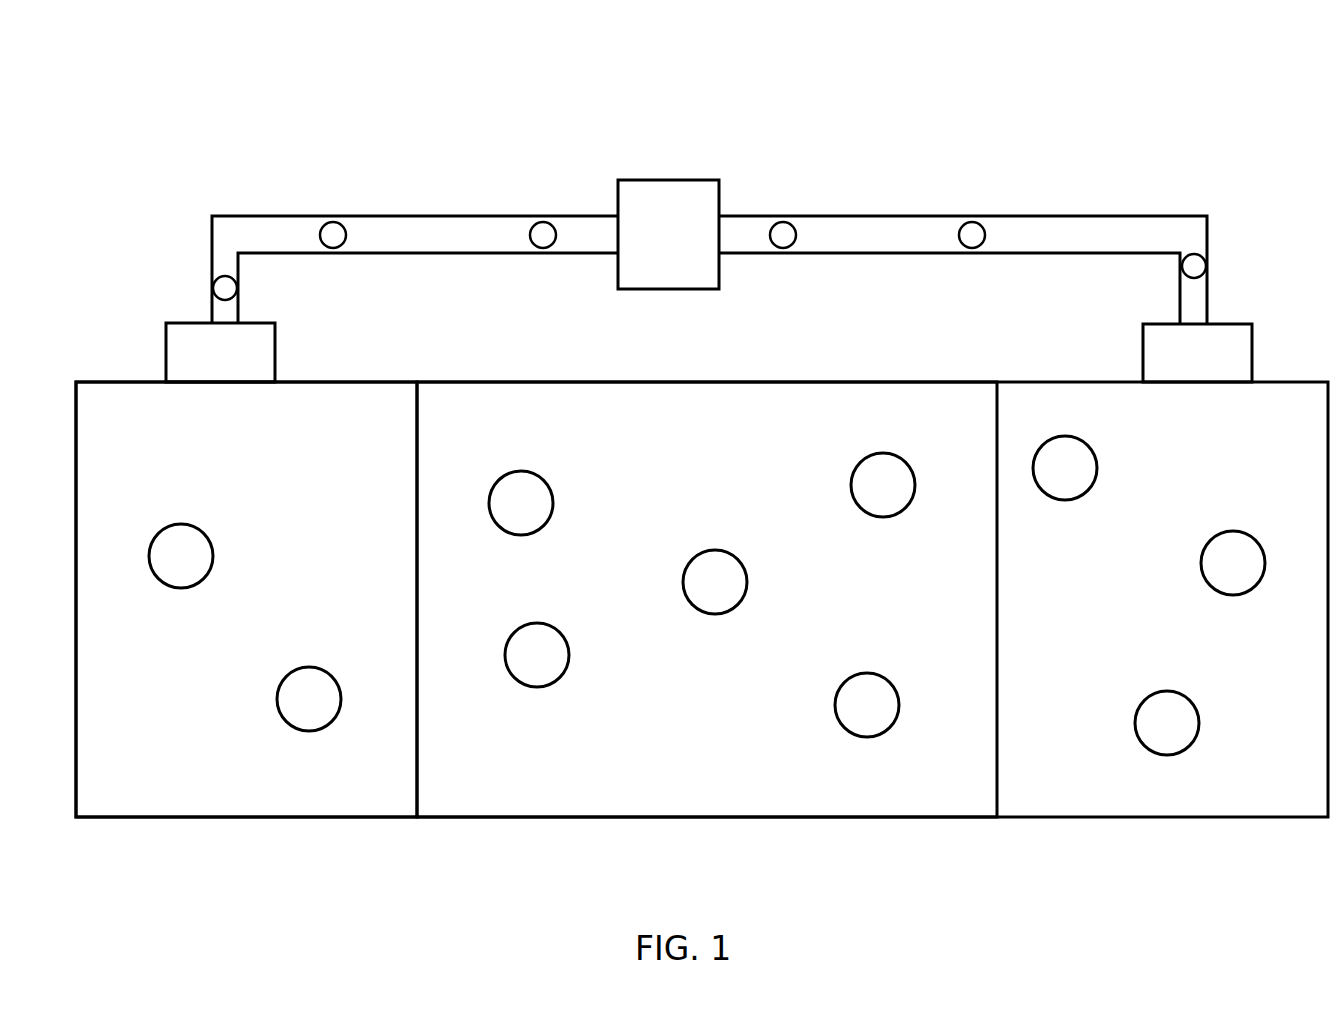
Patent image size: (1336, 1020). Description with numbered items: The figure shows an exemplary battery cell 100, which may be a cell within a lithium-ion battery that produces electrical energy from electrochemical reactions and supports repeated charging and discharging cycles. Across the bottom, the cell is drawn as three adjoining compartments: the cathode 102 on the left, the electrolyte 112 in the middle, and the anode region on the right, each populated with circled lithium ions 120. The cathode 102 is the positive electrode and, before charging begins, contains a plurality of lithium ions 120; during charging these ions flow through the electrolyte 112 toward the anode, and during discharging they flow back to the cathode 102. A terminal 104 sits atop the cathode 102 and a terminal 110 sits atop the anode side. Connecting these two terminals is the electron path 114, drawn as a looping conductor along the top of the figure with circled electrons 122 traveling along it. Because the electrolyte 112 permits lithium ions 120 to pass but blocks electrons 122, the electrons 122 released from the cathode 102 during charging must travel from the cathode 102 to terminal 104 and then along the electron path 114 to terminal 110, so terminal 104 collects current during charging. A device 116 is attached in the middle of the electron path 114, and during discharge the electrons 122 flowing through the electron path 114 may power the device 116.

The battery cell 100 is at (962, 159).
The cathode 102 is at (292, 435).
The terminal 104 is at (240, 365).
The terminal 110 is at (1216, 364).
The electrolyte 112 is at (784, 442).
The electron path 114 is at (418, 246).
The device 116 is at (649, 261).
The lithium ions 120 is at (747, 582).
The electrons 122 is at (540, 222).